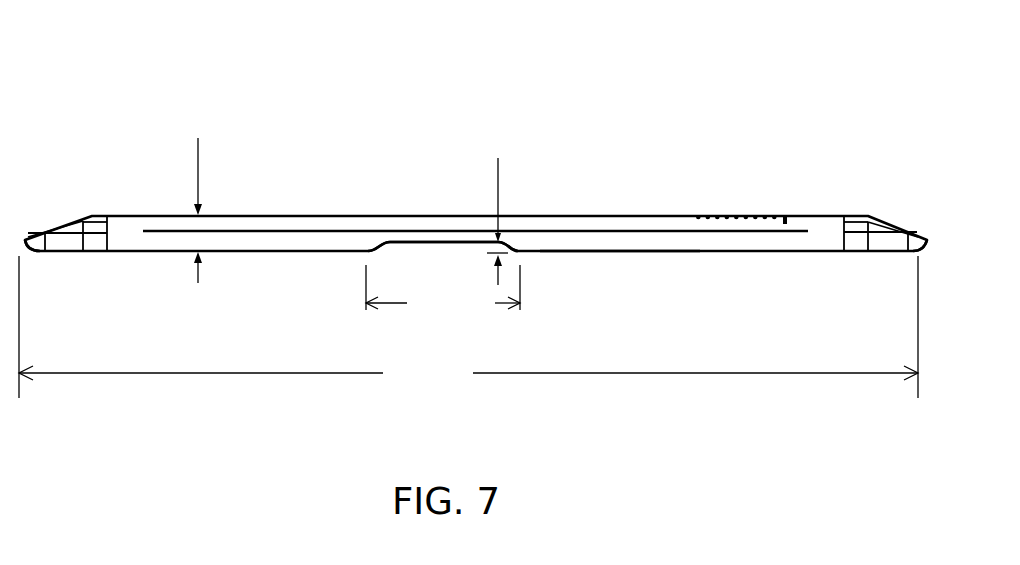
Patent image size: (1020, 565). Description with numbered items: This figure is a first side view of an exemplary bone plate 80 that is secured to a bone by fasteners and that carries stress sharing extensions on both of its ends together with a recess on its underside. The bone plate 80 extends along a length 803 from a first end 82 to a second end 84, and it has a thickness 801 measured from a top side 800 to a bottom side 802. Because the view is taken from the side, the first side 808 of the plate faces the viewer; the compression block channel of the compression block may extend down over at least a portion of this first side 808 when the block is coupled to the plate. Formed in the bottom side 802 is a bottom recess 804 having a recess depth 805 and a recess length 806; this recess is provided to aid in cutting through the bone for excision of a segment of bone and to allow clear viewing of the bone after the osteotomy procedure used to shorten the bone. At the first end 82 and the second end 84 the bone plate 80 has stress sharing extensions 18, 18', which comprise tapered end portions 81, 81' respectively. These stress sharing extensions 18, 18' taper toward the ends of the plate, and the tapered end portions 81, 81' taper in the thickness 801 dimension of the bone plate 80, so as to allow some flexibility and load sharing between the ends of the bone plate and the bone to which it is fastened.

The bone plate 80 is at (138, 107).
The top side 800 is at (625, 216).
The bottom side 802 is at (636, 253).
The bottom recess 804 is at (392, 238).
The first side 808 is at (695, 236).
The stress sharing extension 18 is at (92, 196).
The stress sharing extension 18' is at (863, 186).
The tapered end portion 81 is at (67, 174).
The tapered end portion 81' is at (881, 162).
The first end 82 is at (26, 241).
The second end 84 is at (922, 239).
The thickness 801 is at (198, 138).
The length 803 is at (468, 327).
The recess depth 805 is at (498, 158).
The recess length 806 is at (443, 296).